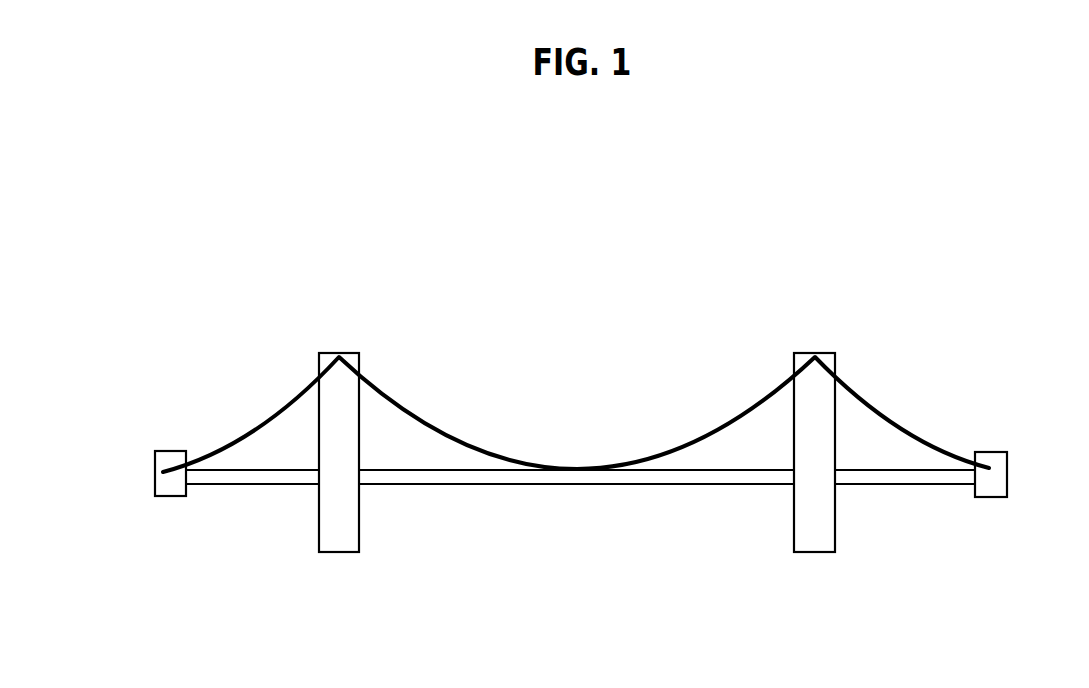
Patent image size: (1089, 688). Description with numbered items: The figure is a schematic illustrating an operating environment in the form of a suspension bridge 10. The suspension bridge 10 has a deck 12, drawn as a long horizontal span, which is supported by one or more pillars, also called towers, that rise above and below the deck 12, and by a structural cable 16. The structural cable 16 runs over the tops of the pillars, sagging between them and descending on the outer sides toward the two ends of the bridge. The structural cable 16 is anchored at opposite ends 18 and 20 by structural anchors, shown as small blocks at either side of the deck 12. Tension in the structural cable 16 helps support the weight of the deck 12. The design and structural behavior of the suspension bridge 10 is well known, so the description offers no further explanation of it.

The suspension bridge 10 is at (256, 277).
The deck 12 is at (517, 477).
The structural cable 16 is at (409, 399).
The end 18 is at (165, 463).
The end 20 is at (992, 465).